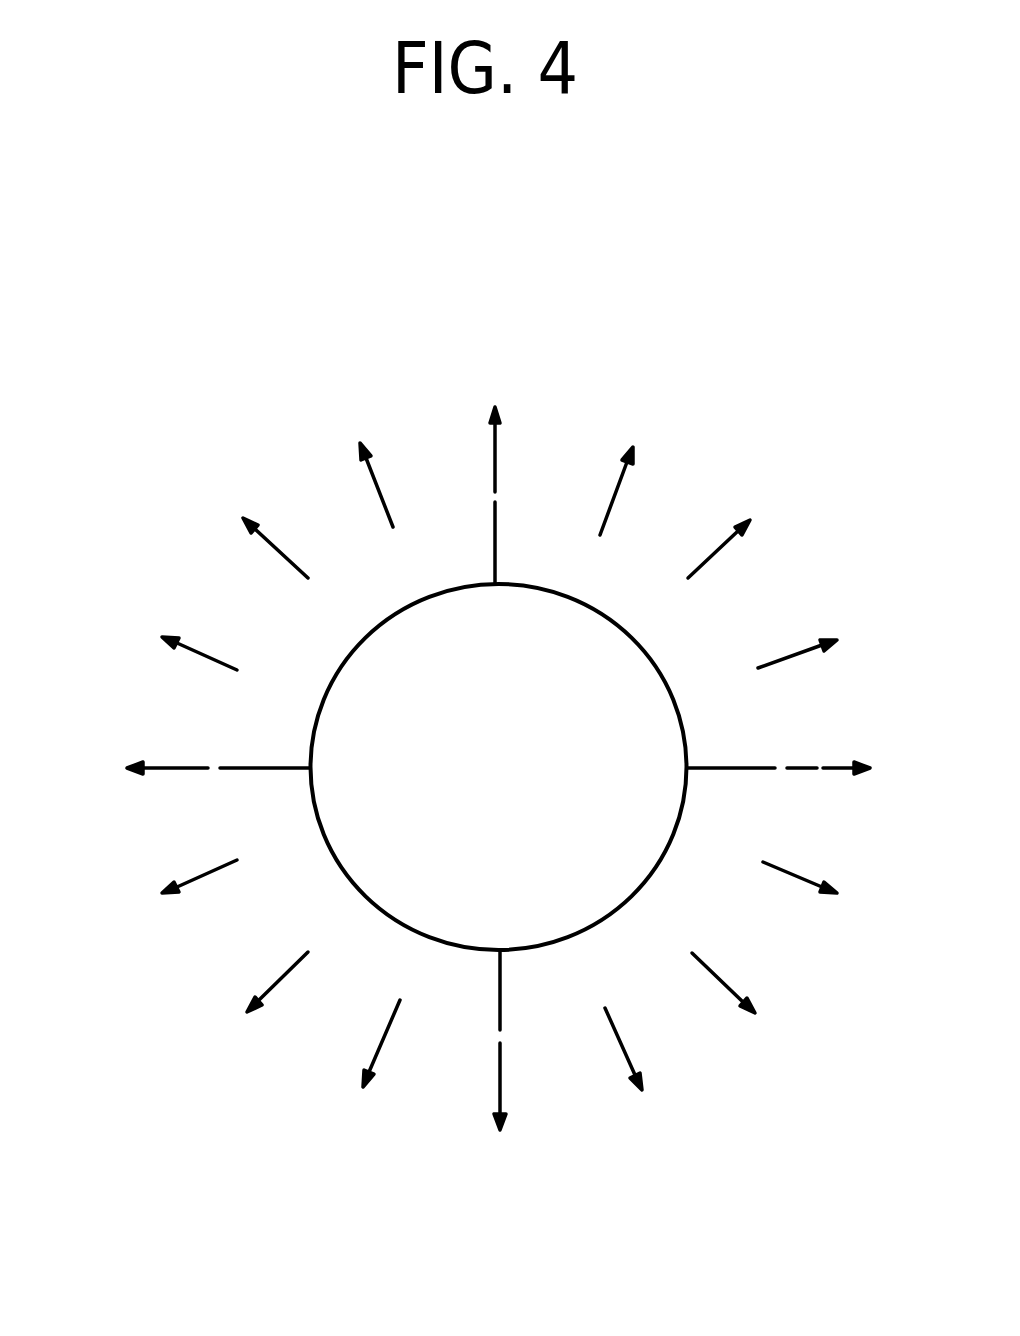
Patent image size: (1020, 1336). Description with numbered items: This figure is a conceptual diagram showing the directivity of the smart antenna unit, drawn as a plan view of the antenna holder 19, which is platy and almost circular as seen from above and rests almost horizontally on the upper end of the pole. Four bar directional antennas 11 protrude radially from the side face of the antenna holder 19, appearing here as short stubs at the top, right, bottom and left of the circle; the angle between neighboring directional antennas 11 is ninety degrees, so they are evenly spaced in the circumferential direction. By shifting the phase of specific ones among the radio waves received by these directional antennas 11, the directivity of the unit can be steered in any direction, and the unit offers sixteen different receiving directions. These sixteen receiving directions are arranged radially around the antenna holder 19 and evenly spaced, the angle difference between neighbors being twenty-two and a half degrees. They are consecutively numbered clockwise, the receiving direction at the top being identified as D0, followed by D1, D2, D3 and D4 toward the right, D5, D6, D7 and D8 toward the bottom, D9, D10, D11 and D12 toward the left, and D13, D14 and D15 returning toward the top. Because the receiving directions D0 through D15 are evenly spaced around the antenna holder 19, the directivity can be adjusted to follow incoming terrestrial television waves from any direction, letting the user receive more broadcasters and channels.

The directional antenna 11 is at (497, 572).
The antenna holder 19 is at (650, 700).
The receiving direction D0 is at (495, 430).
The receiving direction D1 is at (627, 473).
The receiving direction D2 is at (740, 529).
The receiving direction D3 is at (820, 642).
The receiving direction D4 is at (855, 770).
The receiving direction D5 is at (825, 897).
The receiving direction D6 is at (747, 1005).
The receiving direction D7 is at (636, 1069).
The receiving direction D8 is at (504, 1108).
The receiving direction D9 is at (364, 1065).
The receiving direction D10 is at (243, 1005).
The receiving direction D11 is at (169, 895).
The receiving direction D12 is at (134, 770).
The receiving direction D13 is at (168, 643).
The receiving direction D14 is at (244, 528).
The receiving direction D15 is at (351, 468).